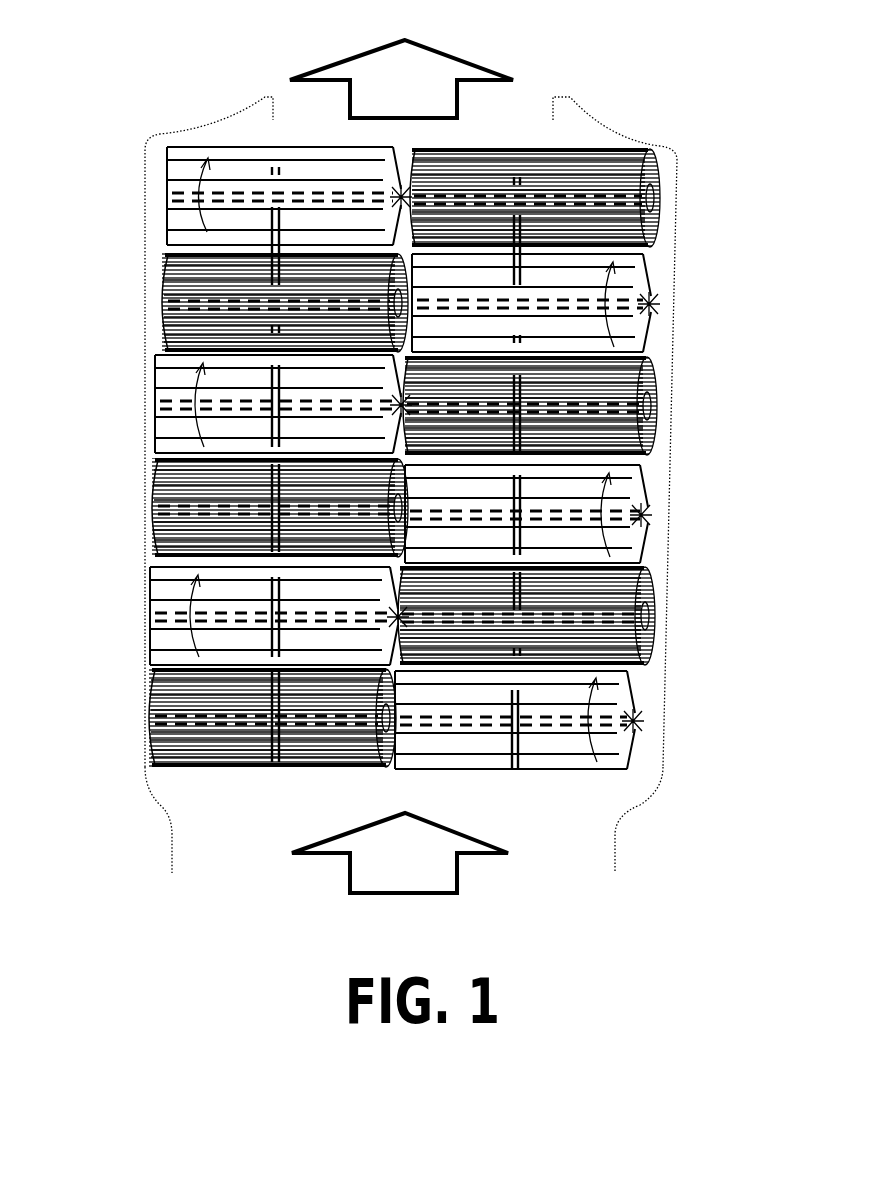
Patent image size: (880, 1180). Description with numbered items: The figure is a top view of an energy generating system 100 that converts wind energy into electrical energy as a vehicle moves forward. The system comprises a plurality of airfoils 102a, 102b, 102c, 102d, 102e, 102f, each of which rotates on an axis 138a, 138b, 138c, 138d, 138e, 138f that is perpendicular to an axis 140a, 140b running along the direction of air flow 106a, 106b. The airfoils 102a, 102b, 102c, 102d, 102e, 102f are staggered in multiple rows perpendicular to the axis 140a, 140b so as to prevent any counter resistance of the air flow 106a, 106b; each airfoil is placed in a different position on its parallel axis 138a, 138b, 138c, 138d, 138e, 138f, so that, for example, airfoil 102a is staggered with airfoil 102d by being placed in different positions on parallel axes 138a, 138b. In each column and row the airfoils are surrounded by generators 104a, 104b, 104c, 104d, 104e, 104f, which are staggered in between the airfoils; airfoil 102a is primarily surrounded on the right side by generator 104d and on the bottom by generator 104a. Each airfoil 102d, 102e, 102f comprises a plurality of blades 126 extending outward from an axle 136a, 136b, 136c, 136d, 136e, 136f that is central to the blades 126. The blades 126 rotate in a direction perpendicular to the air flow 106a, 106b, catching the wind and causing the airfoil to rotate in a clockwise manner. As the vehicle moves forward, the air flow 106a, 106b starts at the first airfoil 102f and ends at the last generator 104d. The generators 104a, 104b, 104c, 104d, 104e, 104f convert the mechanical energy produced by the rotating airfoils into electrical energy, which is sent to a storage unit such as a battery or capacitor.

The energy generating system 100 is at (248, 56).
The airfoil 102a is at (223, 206).
The airfoil 102b is at (158, 392).
The airfoil 102c is at (150, 600).
The airfoil 102d is at (588, 300).
The airfoil 102e is at (585, 508).
The airfoil 102f is at (580, 757).
The generator 104a is at (157, 297).
The generator 104b is at (147, 502).
The generator 104c is at (220, 749).
The generator 104d is at (587, 215).
The generator 104e is at (584, 405).
The generator 104f is at (581, 615).
The direction of air flow 106a is at (400, 853).
The direction of air flow 106b is at (401, 79).
The blades 126 is at (165, 220).
The axle 136a is at (163, 208).
The axle 136b is at (162, 405).
The axle 136c is at (155, 617).
The axle 136d is at (648, 305).
The axle 136e is at (637, 515).
The axle 136f is at (638, 720).
The axis 138a is at (600, 197).
The axis 138b is at (590, 305).
The axis 138c is at (573, 403).
The axis 138d is at (590, 515).
The axis 138e is at (590, 612).
The axis 138f is at (557, 723).
The axis 140a is at (273, 765).
The axis 140b is at (518, 770).